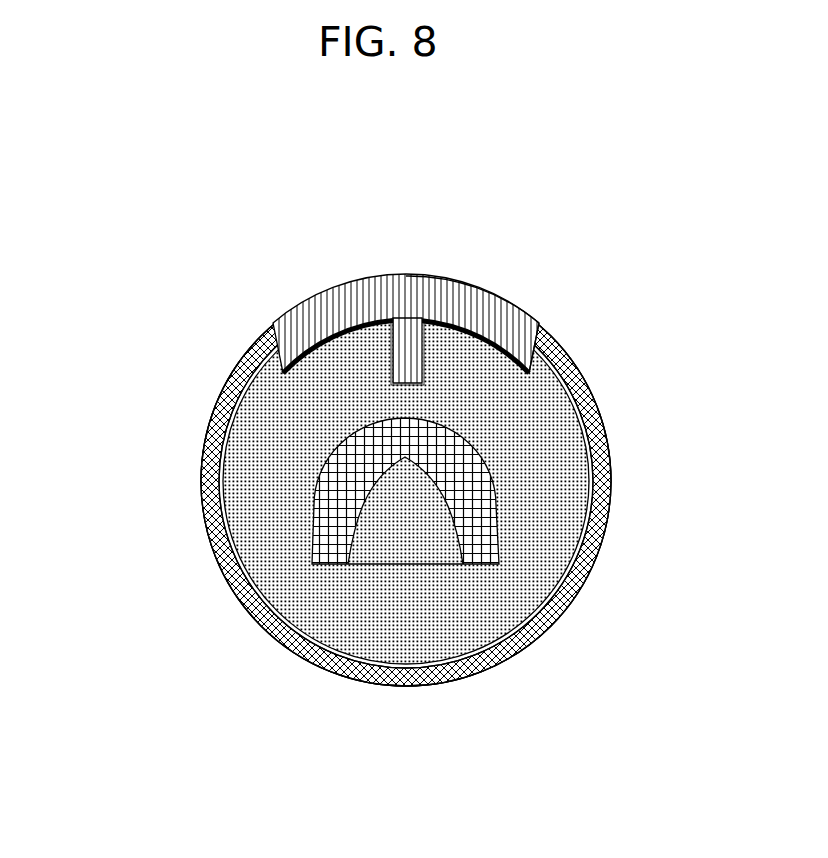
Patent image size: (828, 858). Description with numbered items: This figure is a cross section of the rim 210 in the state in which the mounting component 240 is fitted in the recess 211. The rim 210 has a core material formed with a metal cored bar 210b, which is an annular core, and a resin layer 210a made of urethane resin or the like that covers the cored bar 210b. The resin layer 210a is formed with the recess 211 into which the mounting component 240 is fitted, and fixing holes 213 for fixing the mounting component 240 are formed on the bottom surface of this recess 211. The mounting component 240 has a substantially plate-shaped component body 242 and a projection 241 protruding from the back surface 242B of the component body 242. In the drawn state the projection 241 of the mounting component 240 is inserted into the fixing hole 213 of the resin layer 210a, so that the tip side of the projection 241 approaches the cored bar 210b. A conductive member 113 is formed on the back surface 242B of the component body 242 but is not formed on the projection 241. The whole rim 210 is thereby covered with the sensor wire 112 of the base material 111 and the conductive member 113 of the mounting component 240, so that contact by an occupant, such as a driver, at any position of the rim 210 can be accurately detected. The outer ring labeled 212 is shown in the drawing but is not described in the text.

The rim 210 is at (442, 743).
The resin layer 210a is at (375, 598).
The cored bar 210b is at (312, 548).
The recess 211 is at (252, 357).
The inner ring boundary 212 is at (347, 683).
The fixing hole 213 is at (421, 383).
The sensor wire 112 is at (207, 441).
The base material 111 is at (207, 441).
The conductive member 113 is at (327, 337).
The mounting component 240 is at (337, 287).
The projection 241 is at (426, 345).
The component body 242 is at (483, 318).
The back surface 242B is at (542, 323).